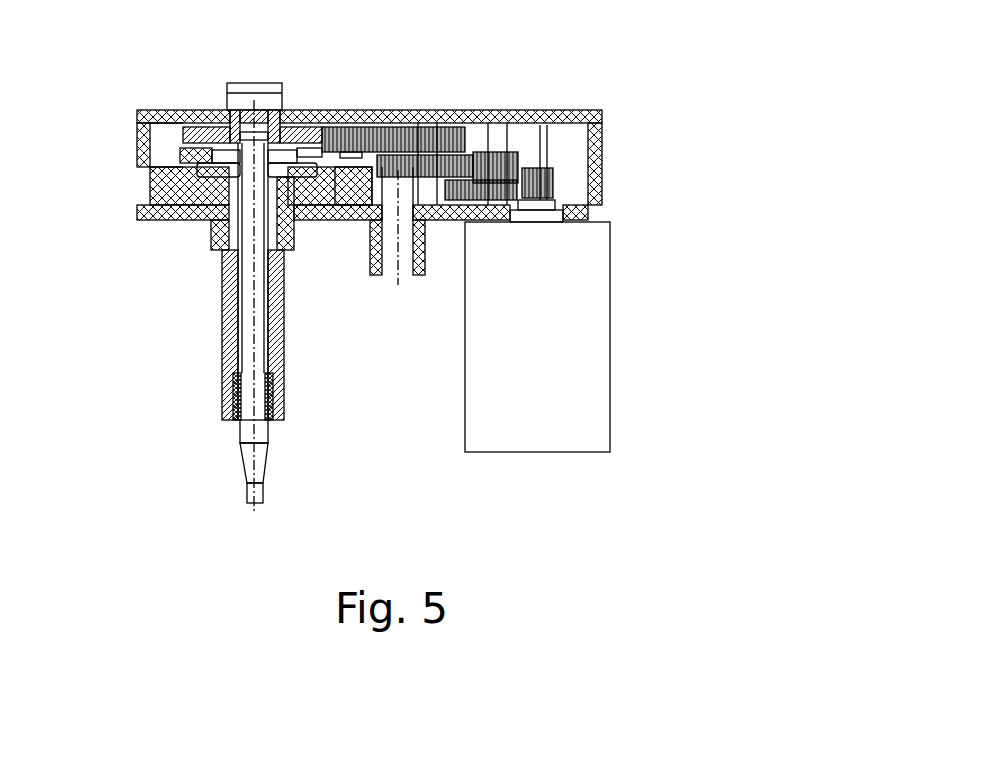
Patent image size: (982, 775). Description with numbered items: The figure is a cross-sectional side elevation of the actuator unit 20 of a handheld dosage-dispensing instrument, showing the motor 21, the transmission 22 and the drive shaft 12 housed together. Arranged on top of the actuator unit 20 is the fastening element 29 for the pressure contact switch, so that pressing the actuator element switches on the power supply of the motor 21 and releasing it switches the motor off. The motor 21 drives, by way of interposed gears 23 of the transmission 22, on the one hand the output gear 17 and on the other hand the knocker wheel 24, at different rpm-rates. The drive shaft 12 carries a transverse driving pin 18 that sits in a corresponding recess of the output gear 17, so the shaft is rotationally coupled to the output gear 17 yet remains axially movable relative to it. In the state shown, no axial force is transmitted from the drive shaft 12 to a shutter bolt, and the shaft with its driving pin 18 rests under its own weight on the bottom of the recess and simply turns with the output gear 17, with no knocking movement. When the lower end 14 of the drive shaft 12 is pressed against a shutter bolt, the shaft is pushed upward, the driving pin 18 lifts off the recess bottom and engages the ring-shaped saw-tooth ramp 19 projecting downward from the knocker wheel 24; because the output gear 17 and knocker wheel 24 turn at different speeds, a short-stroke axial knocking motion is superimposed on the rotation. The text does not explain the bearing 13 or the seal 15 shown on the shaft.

The drive shaft 12 is at (243, 353).
The shaft 13 is at (254, 168).
The lower end 14 is at (250, 461).
The seal bearing 15 is at (255, 388).
The output gear 17 is at (342, 182).
The driving pin 18 is at (282, 170).
The saw-tooth ramp 19 is at (213, 152).
The actuator unit 20 is at (664, 134).
The motor 21 is at (580, 322).
The transmission 22 is at (505, 160).
The interposed gears 23 is at (472, 187).
The knocker wheel 24 is at (197, 135).
The fastening element 29 is at (232, 97).